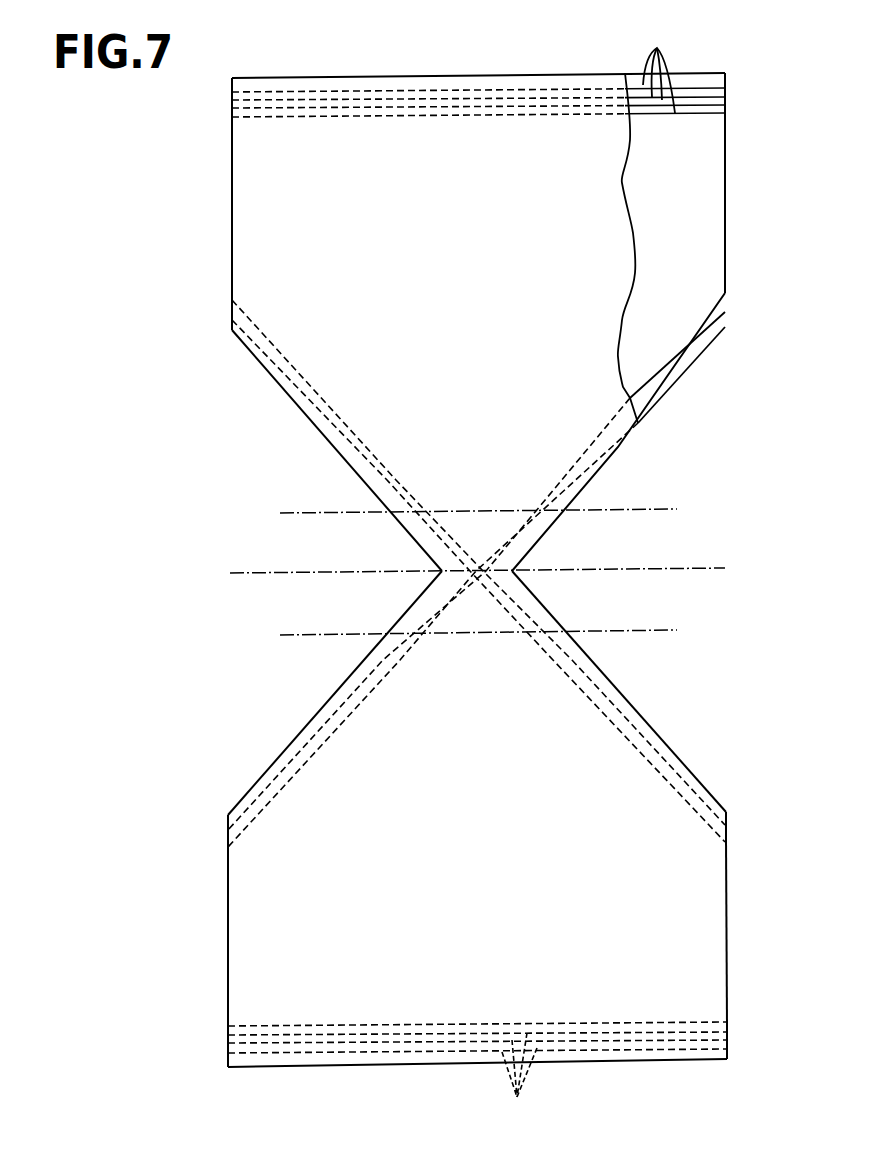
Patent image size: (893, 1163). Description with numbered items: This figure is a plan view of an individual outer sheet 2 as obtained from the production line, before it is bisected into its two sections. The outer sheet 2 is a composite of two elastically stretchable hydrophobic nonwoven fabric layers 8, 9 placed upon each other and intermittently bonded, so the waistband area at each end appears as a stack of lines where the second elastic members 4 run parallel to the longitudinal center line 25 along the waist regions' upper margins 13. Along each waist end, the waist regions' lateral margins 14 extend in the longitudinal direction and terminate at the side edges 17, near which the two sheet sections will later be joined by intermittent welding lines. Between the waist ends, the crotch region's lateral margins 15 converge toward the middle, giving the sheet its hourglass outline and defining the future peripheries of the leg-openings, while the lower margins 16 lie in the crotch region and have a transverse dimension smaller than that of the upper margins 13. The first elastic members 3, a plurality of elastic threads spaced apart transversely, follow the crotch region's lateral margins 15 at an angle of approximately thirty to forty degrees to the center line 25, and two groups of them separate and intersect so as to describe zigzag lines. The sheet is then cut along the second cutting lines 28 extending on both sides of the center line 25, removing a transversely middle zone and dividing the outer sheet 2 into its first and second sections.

The outer sheet 2 is at (730, 65).
The first elastic members 3 is at (683, 338).
The second elastic members 4 is at (588, 577).
The nonwoven fabric layer 8 is at (423, 127).
The nonwoven fabric layer 9 is at (678, 177).
The waist regions' upper margins 13 is at (498, 125).
The waist regions' lateral margins 14 is at (248, 232).
The crotch region's lateral margins 15 is at (295, 378).
The lower margins 16 is at (500, 482).
The side edges 17 is at (232, 185).
The longitudinal center line 25 is at (707, 568).
The second cutting lines 28 is at (668, 509).